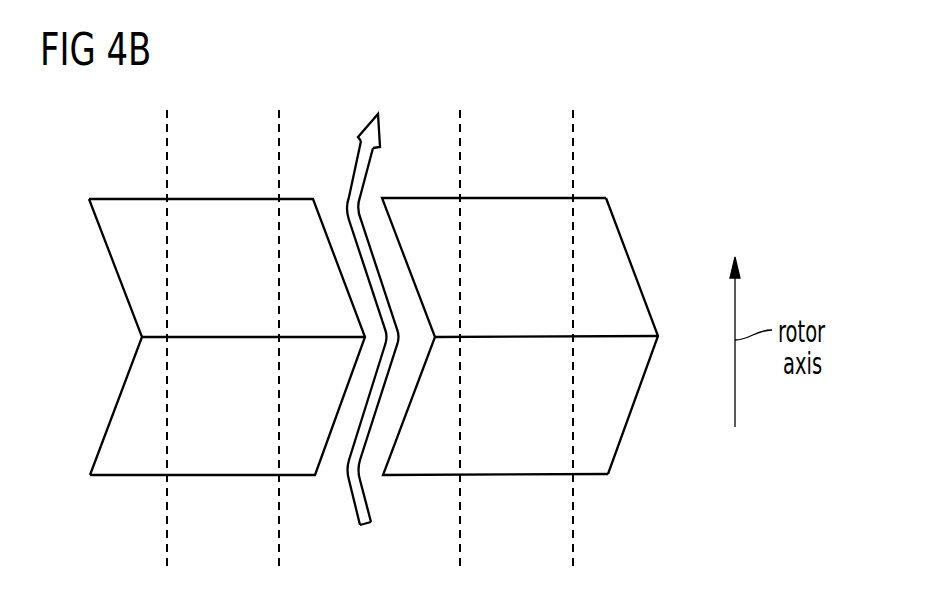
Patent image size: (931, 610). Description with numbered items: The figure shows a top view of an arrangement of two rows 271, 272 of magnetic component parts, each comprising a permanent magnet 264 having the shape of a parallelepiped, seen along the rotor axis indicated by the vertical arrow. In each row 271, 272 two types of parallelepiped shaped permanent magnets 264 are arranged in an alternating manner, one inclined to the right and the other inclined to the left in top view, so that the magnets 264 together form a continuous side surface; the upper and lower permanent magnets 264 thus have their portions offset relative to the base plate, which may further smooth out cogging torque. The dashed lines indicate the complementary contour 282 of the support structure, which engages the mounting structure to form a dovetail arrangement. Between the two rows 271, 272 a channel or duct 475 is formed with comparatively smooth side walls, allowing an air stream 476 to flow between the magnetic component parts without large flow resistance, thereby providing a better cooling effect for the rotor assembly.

The permanent magnet 264 is at (130, 310).
The row 271 is at (232, 500).
The row 272 is at (517, 500).
The complementary contour 282 is at (279, 134).
The channel 475 is at (357, 338).
The air stream 476 is at (359, 500).